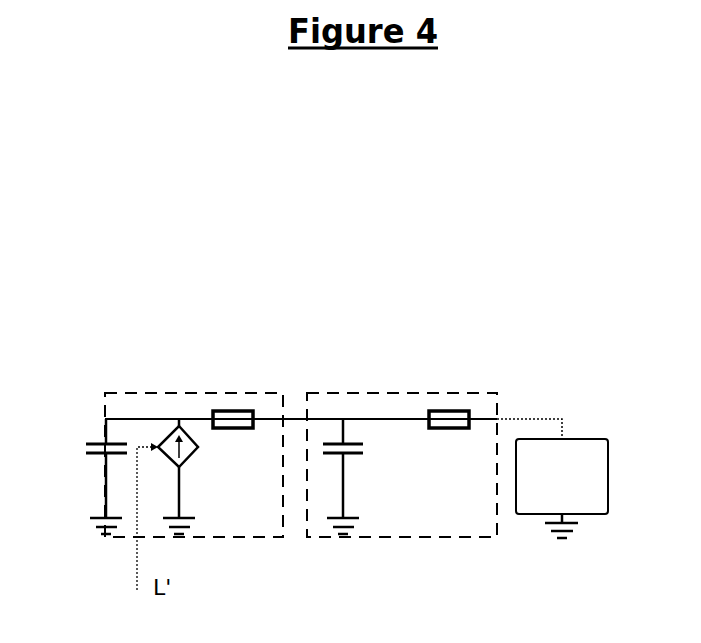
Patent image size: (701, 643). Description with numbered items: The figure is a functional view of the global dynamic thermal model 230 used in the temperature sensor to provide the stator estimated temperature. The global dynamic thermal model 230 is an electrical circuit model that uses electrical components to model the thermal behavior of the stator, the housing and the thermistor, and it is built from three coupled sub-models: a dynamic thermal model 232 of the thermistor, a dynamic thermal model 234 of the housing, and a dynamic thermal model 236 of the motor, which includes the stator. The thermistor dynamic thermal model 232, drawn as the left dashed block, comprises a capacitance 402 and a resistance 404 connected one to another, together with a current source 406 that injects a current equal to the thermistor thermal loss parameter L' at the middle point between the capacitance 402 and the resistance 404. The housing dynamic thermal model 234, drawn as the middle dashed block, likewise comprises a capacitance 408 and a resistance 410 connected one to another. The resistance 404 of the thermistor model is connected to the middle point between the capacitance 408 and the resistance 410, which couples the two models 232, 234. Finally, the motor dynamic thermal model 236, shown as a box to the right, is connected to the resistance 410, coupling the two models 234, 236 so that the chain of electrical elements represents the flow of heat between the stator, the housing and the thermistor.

The global dynamic thermal model 230 is at (229, 268).
The dynamic thermal model of the thermistor 232 is at (180, 393).
The dynamic thermal model of the housing 234 is at (386, 393).
The dynamic thermal model of the motor 236 is at (562, 488).
The capacitance 402 is at (92, 456).
The resistance 404 is at (248, 411).
The current source 406 is at (198, 447).
The capacitance 408 is at (356, 455).
The resistance 410 is at (461, 411).